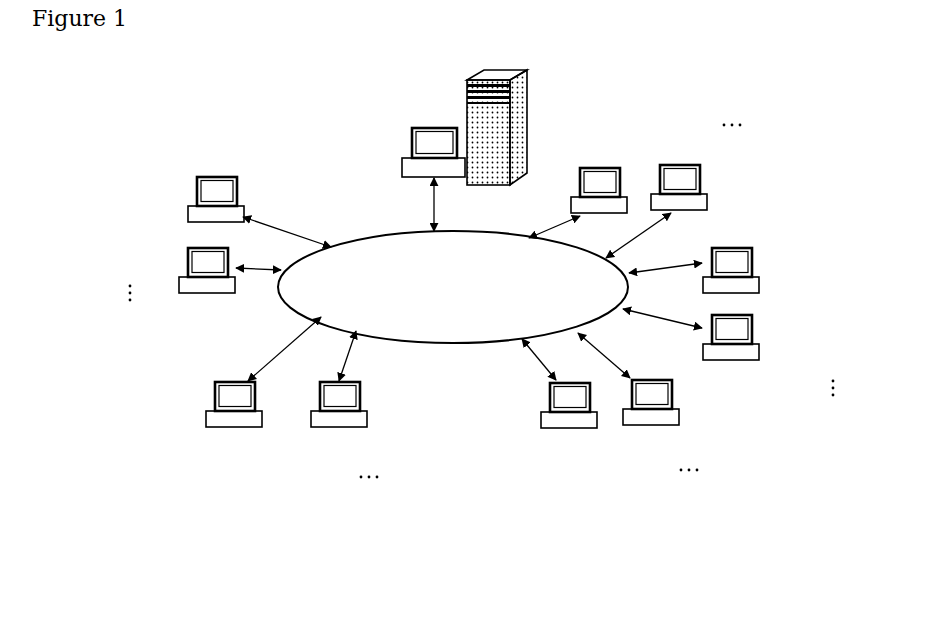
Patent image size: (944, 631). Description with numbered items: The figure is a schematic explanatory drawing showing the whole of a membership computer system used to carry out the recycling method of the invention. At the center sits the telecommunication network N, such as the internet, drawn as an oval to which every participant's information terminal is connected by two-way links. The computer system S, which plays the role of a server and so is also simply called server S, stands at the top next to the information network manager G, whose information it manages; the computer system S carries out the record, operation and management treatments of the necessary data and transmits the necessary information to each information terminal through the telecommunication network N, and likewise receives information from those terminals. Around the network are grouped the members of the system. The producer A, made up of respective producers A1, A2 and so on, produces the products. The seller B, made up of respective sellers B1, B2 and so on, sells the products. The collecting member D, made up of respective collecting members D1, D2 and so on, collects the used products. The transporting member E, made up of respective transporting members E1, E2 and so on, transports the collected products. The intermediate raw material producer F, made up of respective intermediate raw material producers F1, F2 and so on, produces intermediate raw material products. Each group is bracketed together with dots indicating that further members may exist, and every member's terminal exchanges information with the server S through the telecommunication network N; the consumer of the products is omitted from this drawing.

The telecommunication network N is at (306, 304).
The computer system S is at (488, 112).
The information network manager G is at (420, 166).
The producer A is at (98, 187).
The producer A1 is at (190, 216).
The producer A2 is at (192, 283).
The seller B is at (368, 500).
The seller B1 is at (232, 429).
The seller B2 is at (332, 429).
The collecting member D is at (698, 500).
The collecting member D1 is at (568, 430).
The collecting member D2 is at (650, 429).
The transporting member E is at (856, 265).
The transporting member E1 is at (754, 278).
The transporting member E2 is at (750, 320).
The intermediate raw material producer F is at (747, 108).
The intermediate raw material producer F1 is at (603, 177).
The intermediate raw material producer F2 is at (683, 178).